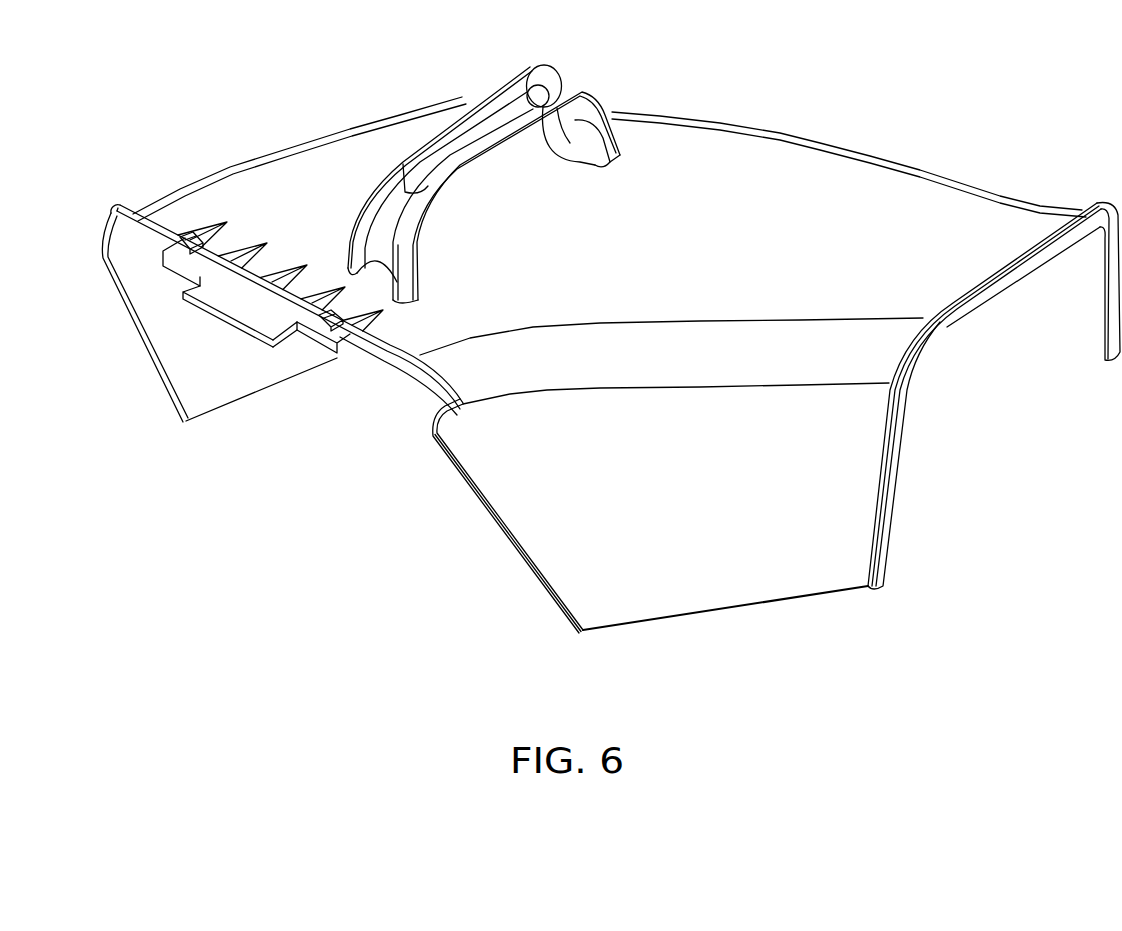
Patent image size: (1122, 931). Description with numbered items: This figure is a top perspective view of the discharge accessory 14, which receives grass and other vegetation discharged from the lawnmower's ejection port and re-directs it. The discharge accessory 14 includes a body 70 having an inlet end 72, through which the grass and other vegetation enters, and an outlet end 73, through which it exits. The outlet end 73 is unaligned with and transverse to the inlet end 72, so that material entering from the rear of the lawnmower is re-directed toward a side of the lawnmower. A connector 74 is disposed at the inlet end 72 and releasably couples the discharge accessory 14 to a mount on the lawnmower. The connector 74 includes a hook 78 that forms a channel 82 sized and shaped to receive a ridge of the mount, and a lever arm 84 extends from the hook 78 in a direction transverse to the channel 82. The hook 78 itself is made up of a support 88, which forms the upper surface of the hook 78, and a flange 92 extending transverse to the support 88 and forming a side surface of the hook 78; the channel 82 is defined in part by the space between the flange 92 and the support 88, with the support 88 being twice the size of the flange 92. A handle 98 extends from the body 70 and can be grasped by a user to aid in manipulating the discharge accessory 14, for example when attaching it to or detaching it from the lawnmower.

The discharge accessory 14 is at (848, 112).
The body 70 is at (560, 443).
The inlet end 72 is at (281, 533).
The outlet end 73 is at (991, 434).
The connector 74 is at (147, 288).
The hook 78 is at (327, 379).
The channel 82 is at (365, 370).
The lever arm 84 is at (240, 306).
The support 88 is at (250, 290).
The flange 92 is at (303, 337).
The handle 98 is at (538, 94).